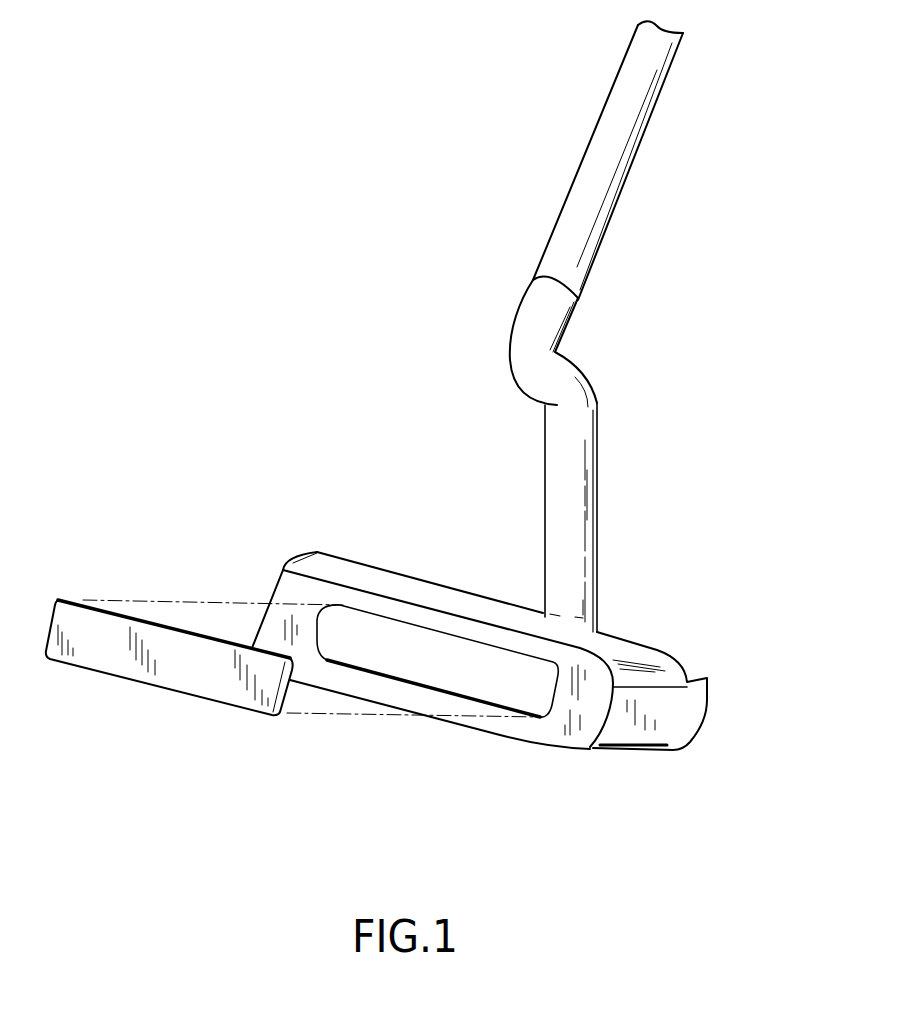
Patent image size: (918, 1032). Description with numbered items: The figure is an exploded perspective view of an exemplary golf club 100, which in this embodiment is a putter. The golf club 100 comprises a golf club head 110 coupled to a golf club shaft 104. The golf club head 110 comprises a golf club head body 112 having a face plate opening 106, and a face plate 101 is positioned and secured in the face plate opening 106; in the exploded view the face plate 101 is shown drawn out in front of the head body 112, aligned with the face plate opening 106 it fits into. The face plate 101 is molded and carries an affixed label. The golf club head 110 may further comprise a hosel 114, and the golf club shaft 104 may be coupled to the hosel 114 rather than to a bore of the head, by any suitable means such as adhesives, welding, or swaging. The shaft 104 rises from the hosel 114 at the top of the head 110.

The golf club 100 is at (686, 450).
The face plate 101 is at (306, 743).
The golf club shaft 104 is at (608, 165).
The face plate opening 106 is at (390, 637).
The golf club head 110 is at (678, 639).
The golf club head body 112 is at (278, 590).
The hosel 114 is at (534, 326).